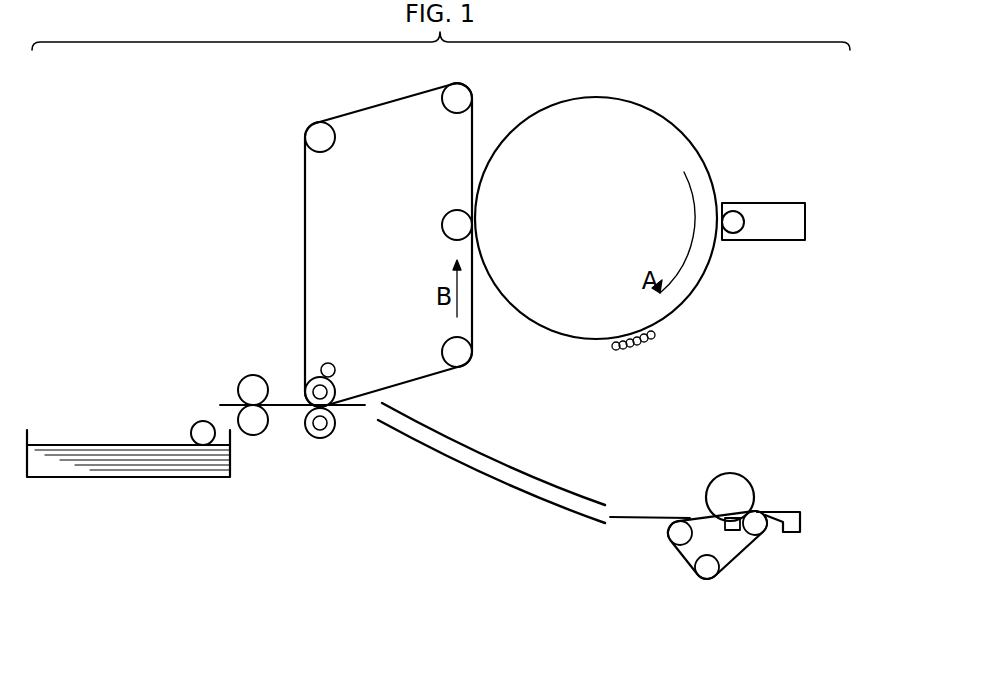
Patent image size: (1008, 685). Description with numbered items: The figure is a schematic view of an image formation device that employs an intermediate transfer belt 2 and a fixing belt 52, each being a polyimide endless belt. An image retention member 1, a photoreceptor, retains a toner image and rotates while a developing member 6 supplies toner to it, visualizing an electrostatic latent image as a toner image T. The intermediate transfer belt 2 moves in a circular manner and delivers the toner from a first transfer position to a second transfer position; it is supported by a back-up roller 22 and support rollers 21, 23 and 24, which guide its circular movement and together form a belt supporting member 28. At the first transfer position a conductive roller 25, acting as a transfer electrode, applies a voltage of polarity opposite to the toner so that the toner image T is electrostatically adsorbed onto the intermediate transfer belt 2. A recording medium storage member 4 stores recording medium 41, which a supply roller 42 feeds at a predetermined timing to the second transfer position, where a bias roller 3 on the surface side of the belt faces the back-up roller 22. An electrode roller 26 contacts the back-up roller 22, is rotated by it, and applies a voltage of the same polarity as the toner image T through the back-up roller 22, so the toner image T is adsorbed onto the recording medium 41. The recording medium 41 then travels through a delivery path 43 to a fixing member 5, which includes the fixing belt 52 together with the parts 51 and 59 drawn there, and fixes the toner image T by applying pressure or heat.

The image retention member 1 is at (667, 120).
The intermediate transfer belt 2 is at (303, 243).
The bias roller 3 is at (318, 438).
The recording medium storage member 4 is at (60, 477).
The fixing member 5 is at (771, 508).
The developing member 6 is at (805, 221).
The support roller 21 is at (447, 111).
The back-up roller 22 is at (313, 379).
The support roller 23 is at (334, 143).
The support roller 24 is at (443, 341).
The conductive roller 25 is at (442, 225).
The electrode roller 26 is at (333, 365).
The belt supporting member 28 is at (335, 245).
The recording medium 41 is at (97, 445).
The supply roller 42 is at (203, 421).
The delivery path 43 is at (536, 508).
The heat roller 51 is at (756, 492).
The fixing belt 52 is at (745, 552).
The separation claw 59 is at (800, 520).
The toner image T is at (667, 343).